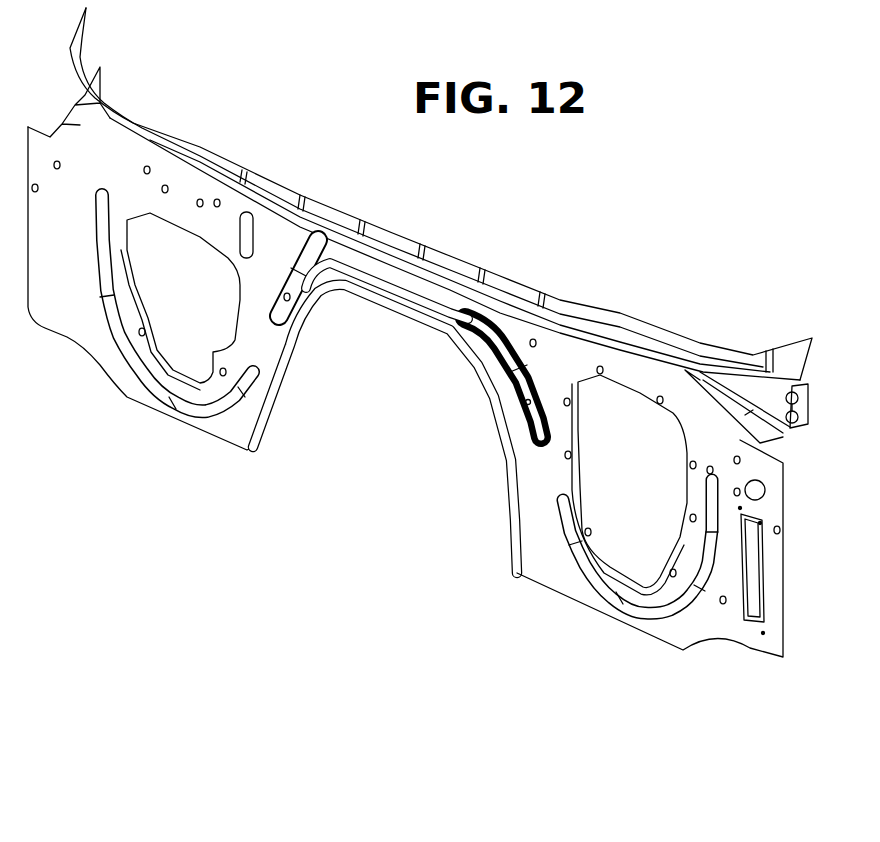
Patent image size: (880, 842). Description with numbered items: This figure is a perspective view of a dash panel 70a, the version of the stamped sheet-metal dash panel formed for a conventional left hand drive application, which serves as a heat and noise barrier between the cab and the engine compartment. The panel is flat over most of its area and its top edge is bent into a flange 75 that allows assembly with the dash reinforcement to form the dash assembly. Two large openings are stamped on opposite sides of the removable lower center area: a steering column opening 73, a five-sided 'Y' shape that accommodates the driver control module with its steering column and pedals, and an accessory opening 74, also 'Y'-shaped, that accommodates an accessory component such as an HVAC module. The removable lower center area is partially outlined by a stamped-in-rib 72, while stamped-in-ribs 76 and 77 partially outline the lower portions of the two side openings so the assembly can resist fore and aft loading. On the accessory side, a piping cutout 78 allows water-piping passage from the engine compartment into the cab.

The dash panel 70a is at (711, 221).
The stamped-in-rib 72 is at (316, 283).
The steering column opening 73 is at (627, 468).
The accessory opening 74 is at (200, 285).
The flange 75 is at (755, 355).
The stamped-in-rib 76 is at (164, 404).
The stamped-in-rib 77 is at (608, 600).
The piping cutout 78 is at (247, 211).